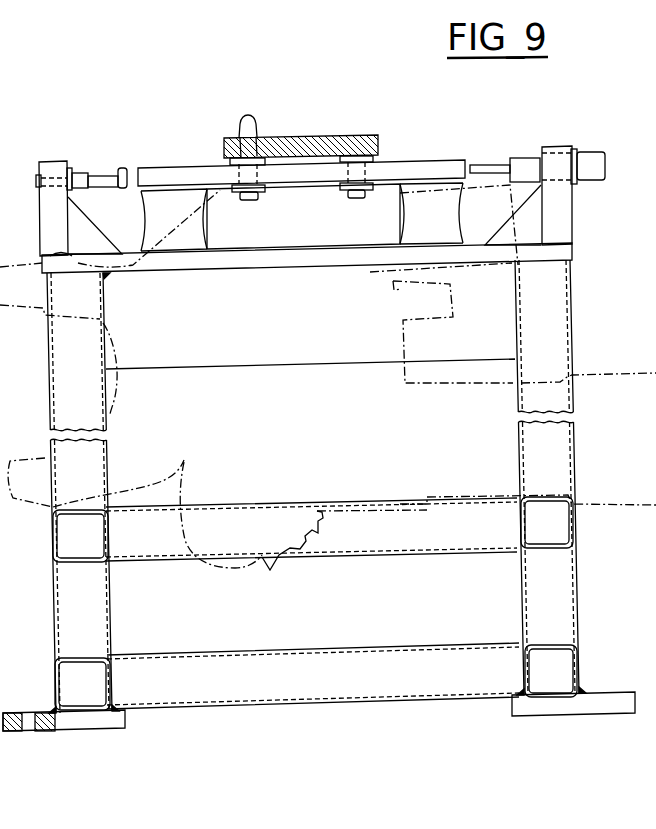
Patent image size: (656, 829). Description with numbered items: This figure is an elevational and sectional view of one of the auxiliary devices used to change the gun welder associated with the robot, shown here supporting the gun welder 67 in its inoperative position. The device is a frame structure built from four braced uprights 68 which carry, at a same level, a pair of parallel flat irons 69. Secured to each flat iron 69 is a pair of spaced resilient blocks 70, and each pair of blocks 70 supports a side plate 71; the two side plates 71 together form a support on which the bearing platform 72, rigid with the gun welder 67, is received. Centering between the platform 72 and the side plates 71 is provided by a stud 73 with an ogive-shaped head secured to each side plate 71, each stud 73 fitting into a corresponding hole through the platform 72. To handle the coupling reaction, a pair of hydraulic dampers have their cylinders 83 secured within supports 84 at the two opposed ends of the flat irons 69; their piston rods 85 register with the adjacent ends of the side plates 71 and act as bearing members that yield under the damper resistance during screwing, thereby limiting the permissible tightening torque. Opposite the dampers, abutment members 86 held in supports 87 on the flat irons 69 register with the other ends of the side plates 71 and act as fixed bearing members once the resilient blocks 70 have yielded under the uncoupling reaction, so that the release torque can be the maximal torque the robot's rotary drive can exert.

The gun welder 67 is at (28, 452).
The braced upright 68 is at (553, 320).
The flat iron 69 is at (297, 261).
The resilient block 70 is at (179, 246).
The side plate 71 is at (165, 175).
The bearing platform 72 is at (348, 142).
The stud 73 is at (240, 122).
The cylinder 83 is at (535, 157).
The support 84 is at (562, 211).
The piston rod 85 is at (487, 168).
The abutment member 86 is at (100, 178).
The support 87 is at (51, 210).